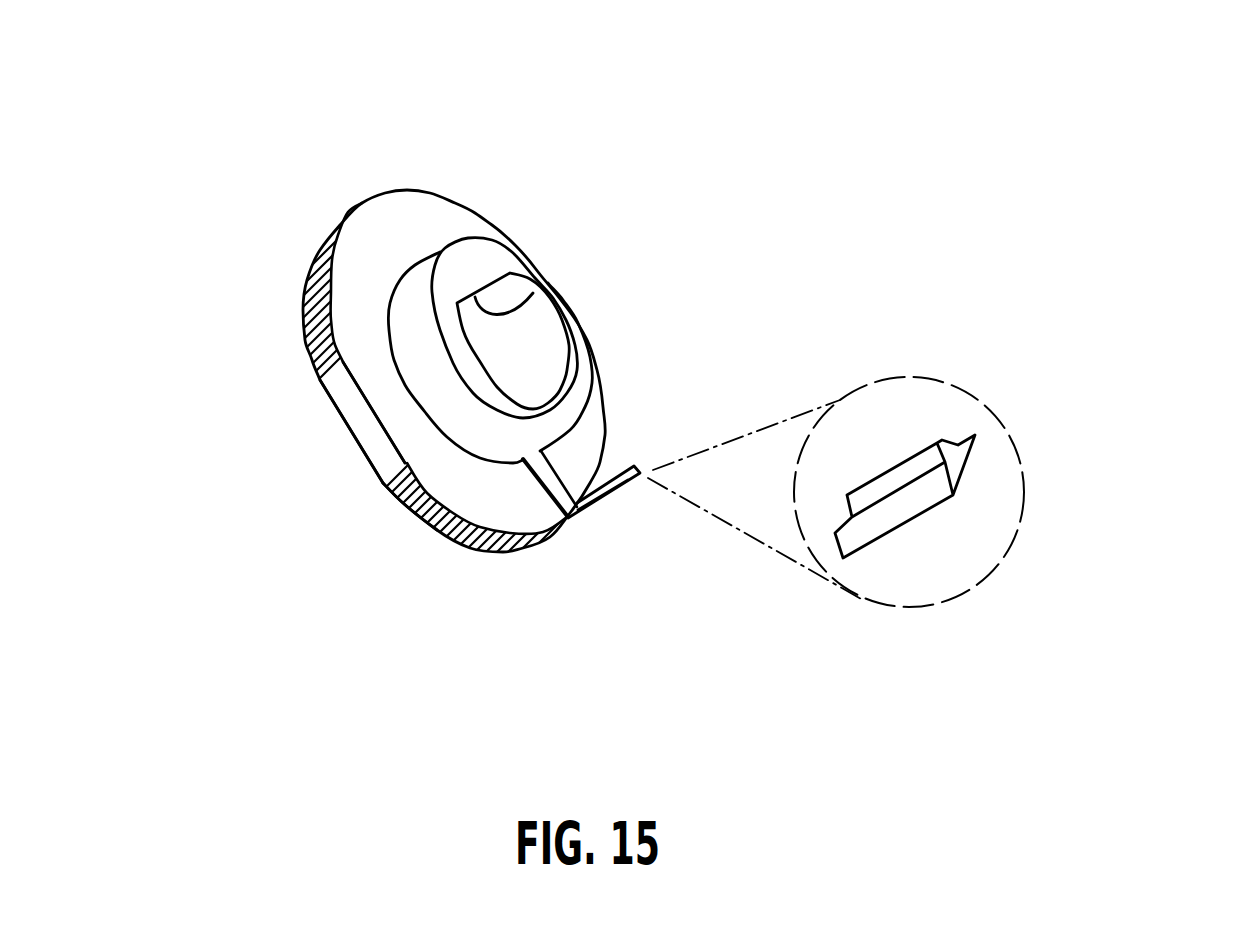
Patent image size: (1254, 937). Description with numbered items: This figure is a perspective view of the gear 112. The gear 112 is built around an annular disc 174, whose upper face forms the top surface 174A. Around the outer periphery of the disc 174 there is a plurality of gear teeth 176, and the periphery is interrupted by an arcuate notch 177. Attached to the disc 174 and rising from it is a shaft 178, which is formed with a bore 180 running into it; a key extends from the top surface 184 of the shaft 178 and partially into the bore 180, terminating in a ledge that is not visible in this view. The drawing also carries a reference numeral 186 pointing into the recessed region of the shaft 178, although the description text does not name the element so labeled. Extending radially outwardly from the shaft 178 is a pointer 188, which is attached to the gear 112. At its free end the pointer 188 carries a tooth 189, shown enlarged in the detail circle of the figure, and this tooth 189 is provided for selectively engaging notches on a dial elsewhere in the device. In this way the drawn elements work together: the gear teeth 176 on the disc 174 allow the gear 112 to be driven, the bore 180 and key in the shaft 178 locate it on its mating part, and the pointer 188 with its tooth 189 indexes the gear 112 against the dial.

The gear 112 is at (422, 515).
The annular disc 174 is at (382, 257).
The top surface 174A is at (387, 391).
The gear teeth 176 is at (307, 280).
The arcuate notch 177 is at (378, 423).
The shaft 178 is at (412, 342).
The bore 180 is at (537, 353).
The top surface 184 is at (526, 422).
The recess 186 is at (527, 302).
The pointer 188 is at (645, 480).
The tooth 189 is at (615, 480).